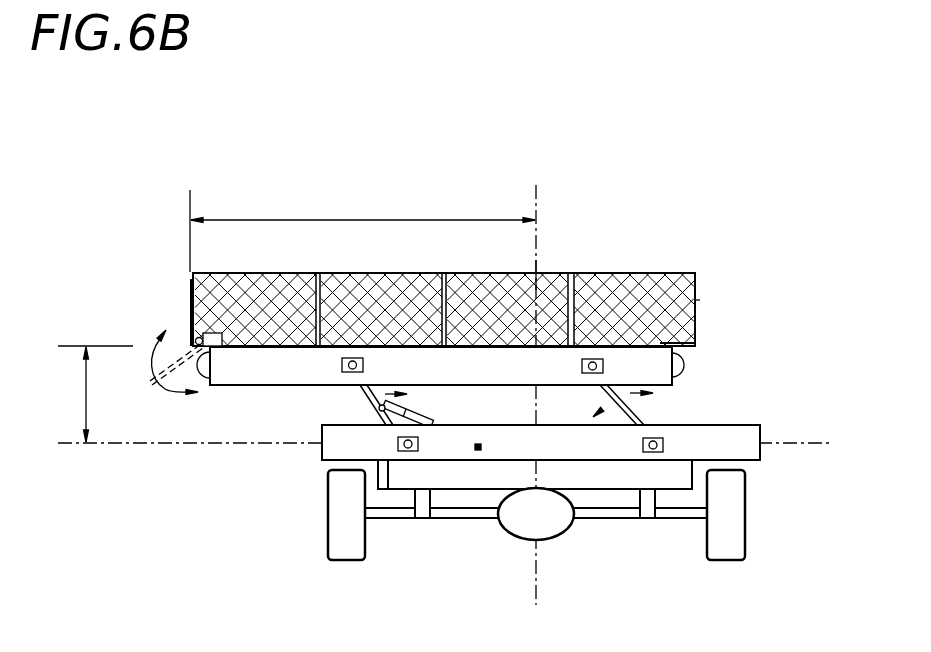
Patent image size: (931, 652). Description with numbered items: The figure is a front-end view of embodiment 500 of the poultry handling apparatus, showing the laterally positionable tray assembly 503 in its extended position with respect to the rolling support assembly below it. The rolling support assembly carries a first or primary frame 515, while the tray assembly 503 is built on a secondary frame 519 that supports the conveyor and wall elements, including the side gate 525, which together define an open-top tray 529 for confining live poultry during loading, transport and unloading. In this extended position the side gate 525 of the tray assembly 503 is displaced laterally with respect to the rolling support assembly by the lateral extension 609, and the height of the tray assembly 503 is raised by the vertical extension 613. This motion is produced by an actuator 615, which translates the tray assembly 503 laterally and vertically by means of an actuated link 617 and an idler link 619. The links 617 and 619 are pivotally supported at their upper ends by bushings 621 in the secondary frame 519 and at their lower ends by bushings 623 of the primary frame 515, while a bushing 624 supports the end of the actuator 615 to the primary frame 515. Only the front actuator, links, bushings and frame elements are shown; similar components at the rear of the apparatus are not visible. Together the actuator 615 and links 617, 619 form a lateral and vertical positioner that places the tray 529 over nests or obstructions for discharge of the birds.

The embodiment of the apparatus 500 is at (768, 299).
The laterally positionable tray assembly 503 is at (655, 265).
The primary frame 515 is at (760, 433).
The secondary frame 519 is at (673, 380).
The side gate 525 is at (190, 307).
The open-top tray 529 is at (557, 272).
The lateral extension 609 is at (362, 230).
The vertical extension 613 is at (86, 395).
The actuator 615 is at (420, 420).
The actuated link 617 is at (350, 408).
The idler link 619 is at (628, 413).
The bushings 621 is at (342, 365).
The bushings 623 is at (408, 452).
The bushing 624 is at (478, 448).